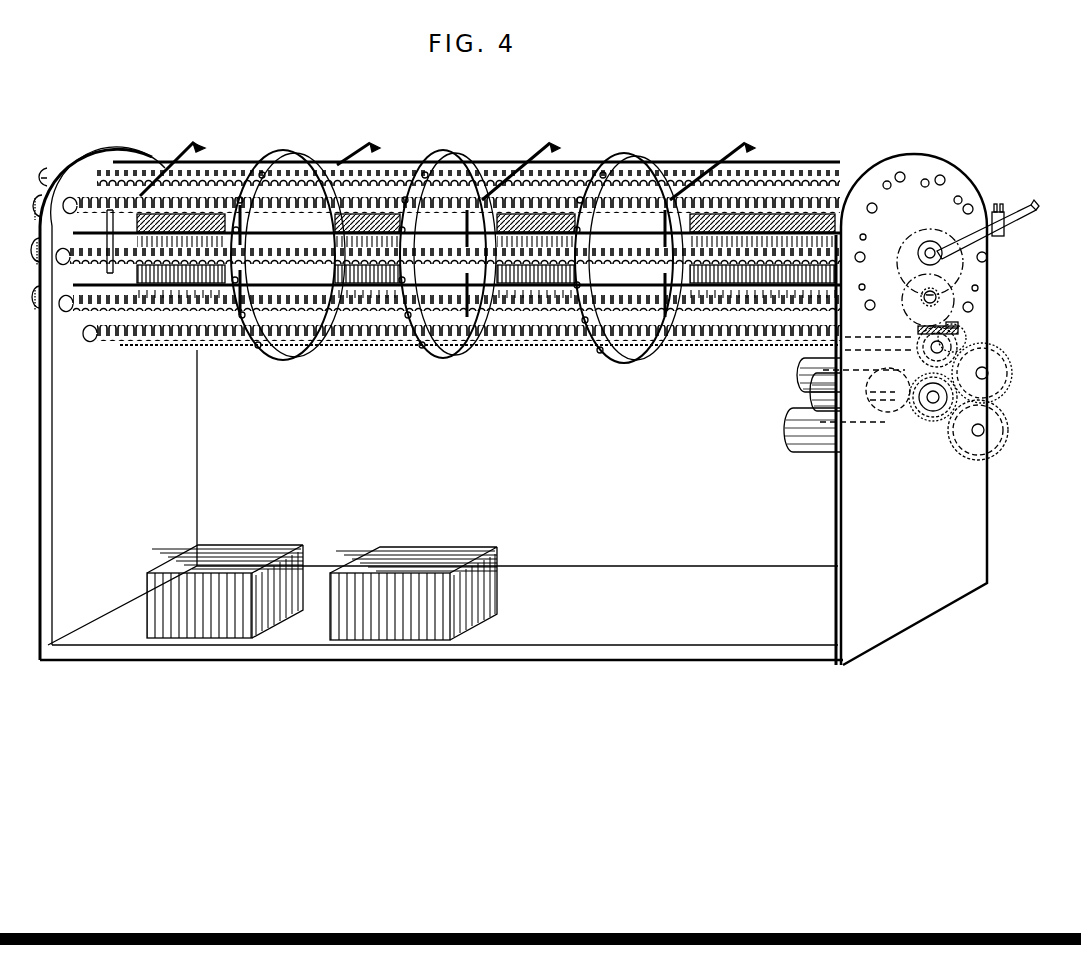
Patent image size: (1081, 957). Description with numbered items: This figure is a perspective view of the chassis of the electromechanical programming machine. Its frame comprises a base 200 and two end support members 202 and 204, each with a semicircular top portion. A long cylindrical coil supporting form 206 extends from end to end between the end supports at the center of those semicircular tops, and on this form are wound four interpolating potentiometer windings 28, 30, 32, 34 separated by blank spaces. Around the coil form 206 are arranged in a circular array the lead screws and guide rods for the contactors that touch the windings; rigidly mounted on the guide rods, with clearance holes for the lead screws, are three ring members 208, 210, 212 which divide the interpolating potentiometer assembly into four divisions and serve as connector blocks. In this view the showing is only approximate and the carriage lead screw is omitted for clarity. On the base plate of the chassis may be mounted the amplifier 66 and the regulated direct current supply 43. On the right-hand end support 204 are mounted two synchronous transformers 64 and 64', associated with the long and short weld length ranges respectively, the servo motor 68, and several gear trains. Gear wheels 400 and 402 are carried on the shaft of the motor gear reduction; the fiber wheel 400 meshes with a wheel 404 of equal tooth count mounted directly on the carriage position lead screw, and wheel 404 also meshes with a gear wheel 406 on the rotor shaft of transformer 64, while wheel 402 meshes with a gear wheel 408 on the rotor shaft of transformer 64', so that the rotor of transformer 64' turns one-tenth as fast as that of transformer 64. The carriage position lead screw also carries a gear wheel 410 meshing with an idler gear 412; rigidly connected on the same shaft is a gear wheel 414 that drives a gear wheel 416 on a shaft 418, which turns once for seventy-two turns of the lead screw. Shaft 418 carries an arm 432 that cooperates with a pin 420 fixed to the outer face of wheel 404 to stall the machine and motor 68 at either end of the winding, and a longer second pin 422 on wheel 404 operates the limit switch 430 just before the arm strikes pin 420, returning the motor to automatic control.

The base 200 is at (192, 652).
The end support member 202 is at (88, 172).
The end support member 204 is at (955, 180).
The coil supporting form 206 is at (380, 270).
The ring member 208 is at (293, 152).
The ring member 210 is at (473, 153).
The ring member 212 is at (676, 122).
The interpolating potentiometer winding 28 is at (192, 212).
The interpolating potentiometer winding 30 is at (378, 217).
The interpolating potentiometer winding 32 is at (555, 217).
The interpolating potentiometer winding 34 is at (767, 218).
The regulated direct current supply 43 is at (260, 552).
The amplifier 66 is at (442, 558).
The servo motor 68 is at (800, 372).
The synchronous transformer 64 is at (804, 428).
The synchronous transformer 64' is at (800, 468).
The gear wheel 400 is at (1005, 377).
The gear wheel 402 is at (1010, 418).
The gear wheel 404 is at (932, 360).
The gear wheel 406 is at (942, 423).
The gear wheel 408 is at (995, 448).
The gear wheel 410 is at (913, 335).
The idler gear 412 is at (943, 300).
The gear wheel 414 is at (925, 295).
The gear wheel 416 is at (945, 265).
The shaft 418 is at (928, 248).
The pin 420 is at (958, 327).
The pin 422 is at (962, 333).
The limit switch 430 is at (998, 233).
The arm 432 is at (1008, 220).